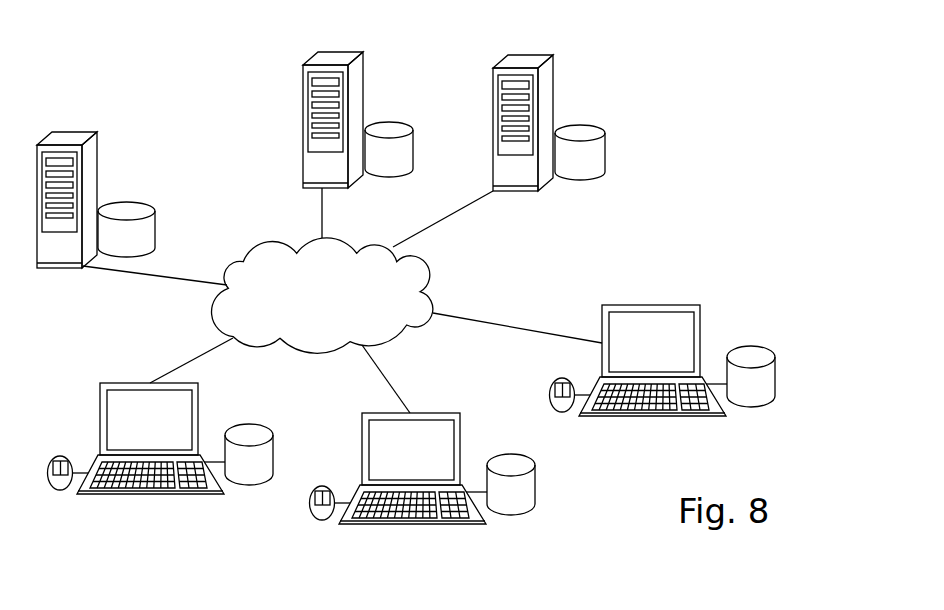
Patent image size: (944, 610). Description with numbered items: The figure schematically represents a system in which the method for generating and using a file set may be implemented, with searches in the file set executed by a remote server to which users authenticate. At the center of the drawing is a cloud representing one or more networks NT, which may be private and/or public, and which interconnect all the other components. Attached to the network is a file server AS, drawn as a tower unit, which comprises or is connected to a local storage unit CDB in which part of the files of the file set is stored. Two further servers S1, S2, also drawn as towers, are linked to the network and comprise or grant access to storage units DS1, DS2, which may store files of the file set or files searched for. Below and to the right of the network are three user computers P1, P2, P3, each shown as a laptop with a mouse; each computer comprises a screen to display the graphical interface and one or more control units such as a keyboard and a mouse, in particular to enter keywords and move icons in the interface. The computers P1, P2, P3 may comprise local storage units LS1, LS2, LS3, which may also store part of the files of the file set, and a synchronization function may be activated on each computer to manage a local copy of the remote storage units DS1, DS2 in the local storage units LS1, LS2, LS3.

The file server AS is at (75, 257).
The local storage unit CDB is at (102, 247).
The server S1 is at (341, 177).
The storage unit DS1 is at (368, 163).
The server S2 is at (531, 180).
The storage unit DS2 is at (559, 166).
The network NT is at (322, 295).
The user computer P1 is at (125, 495).
The local storage unit LS1 is at (249, 454).
The user computer P2 is at (442, 411).
The local storage unit LS2 is at (511, 484).
The user computer P3 is at (682, 304).
The local storage unit LS3 is at (751, 376).